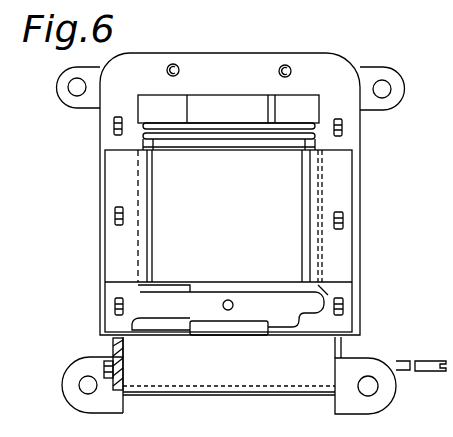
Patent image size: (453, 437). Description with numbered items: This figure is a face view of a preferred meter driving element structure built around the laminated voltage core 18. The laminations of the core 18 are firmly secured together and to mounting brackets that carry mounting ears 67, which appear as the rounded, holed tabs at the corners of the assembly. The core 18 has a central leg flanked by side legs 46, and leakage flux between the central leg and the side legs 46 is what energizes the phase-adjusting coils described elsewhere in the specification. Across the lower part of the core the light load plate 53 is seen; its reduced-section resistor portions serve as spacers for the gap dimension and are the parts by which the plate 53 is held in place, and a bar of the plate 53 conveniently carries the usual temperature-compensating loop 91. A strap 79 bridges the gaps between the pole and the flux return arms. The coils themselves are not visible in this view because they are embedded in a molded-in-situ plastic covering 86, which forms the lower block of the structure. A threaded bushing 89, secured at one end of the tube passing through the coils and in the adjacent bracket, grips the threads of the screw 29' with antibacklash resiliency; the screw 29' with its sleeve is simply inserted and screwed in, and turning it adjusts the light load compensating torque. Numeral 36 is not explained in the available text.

The voltage core 18 is at (100, 205).
The armature 36 is at (237, 1).
The side legs 46 is at (100, 145).
The light load plate 53 is at (167, 332).
The mounting ears 67 is at (374, 70).
The strap 79 is at (347, 294).
The molded-in-situ plastic covering 86 is at (268, 380).
The threaded bushing 89 is at (110, 353).
The temperature-compensating loop 91 is at (236, 333).
The screw 29' is at (421, 343).